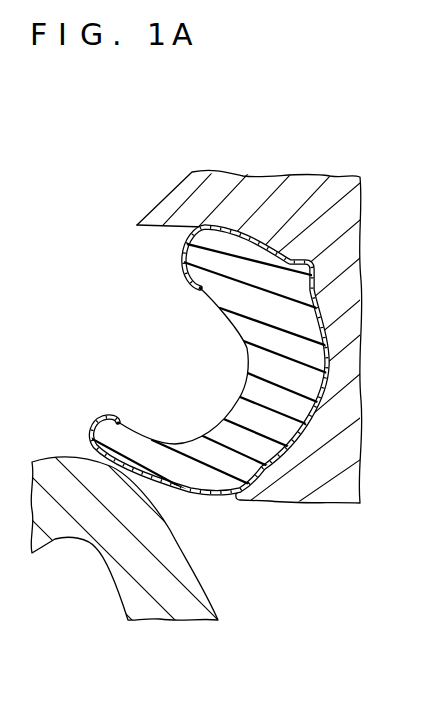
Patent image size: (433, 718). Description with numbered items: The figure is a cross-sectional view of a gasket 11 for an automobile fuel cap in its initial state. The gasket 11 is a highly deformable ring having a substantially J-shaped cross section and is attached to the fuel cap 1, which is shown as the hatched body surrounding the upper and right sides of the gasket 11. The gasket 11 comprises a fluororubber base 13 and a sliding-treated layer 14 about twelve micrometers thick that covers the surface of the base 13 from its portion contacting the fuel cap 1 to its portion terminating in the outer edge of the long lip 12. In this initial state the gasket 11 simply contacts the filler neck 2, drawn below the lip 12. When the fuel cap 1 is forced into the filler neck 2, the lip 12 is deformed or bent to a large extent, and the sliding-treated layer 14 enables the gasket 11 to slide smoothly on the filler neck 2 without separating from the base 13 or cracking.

The fuel cap 1 is at (165, 202).
The filler neck 2 is at (122, 585).
The gasket 11 is at (171, 275).
The lip 12 is at (157, 442).
The fluororubber base 13 is at (199, 447).
The sliding-treated layer 14 is at (200, 497).